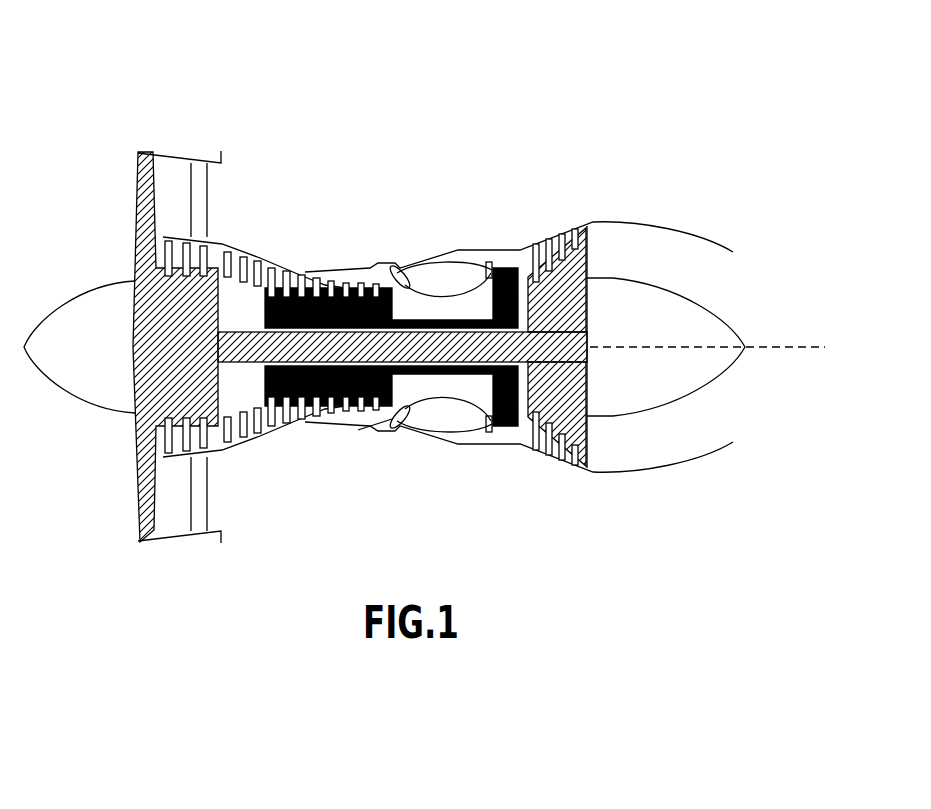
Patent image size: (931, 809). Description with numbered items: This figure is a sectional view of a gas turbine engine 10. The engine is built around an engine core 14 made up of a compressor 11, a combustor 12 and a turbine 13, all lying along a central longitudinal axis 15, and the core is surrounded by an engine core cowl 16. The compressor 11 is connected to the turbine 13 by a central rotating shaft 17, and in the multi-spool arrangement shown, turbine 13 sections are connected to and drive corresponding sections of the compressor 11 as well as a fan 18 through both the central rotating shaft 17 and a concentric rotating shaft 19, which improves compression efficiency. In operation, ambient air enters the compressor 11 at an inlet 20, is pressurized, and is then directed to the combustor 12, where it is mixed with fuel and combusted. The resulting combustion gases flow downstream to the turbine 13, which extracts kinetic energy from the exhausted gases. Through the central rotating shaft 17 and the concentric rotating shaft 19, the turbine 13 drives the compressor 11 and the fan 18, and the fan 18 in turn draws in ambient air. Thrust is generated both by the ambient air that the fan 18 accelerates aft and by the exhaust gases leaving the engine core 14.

The gas turbine engine 10 is at (233, 94).
The compressor 11 is at (292, 285).
The combustor 12 is at (438, 283).
The turbine 13 is at (533, 248).
The engine core 14 is at (516, 453).
The central longitudinal axis 15 is at (777, 347).
The engine core cowl 16 is at (307, 423).
The central rotating shaft 17 is at (230, 365).
The fan 18 is at (140, 220).
The concentric rotating shaft 19 is at (442, 378).
The inlet 20 is at (158, 452).